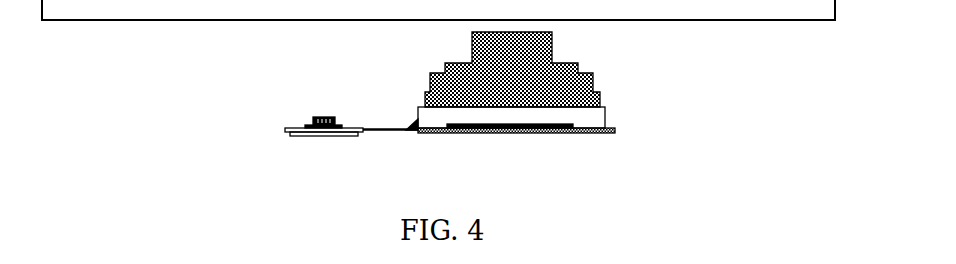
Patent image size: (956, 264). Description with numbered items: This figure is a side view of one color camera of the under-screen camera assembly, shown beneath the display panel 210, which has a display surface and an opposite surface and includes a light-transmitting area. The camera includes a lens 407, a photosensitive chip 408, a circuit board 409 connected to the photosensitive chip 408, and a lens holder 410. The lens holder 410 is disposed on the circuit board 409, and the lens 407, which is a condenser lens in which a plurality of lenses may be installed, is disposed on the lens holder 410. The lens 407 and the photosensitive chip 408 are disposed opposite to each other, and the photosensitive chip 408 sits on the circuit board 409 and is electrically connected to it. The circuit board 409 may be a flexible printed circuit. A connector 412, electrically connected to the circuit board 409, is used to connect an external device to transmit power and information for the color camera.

The display panel 210 is at (708, 11).
The lens 407 is at (445, 68).
The photosensitive chip 408 is at (447, 125).
The circuit board 409 is at (415, 128).
The lens holder 410 is at (592, 115).
The connector 412 is at (308, 120).